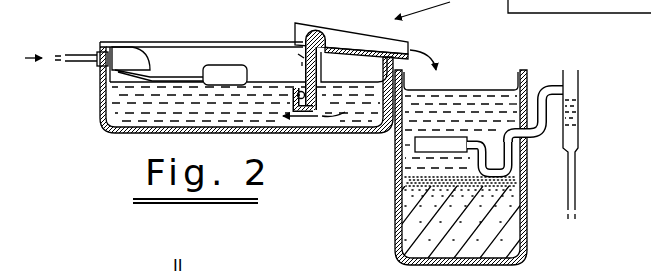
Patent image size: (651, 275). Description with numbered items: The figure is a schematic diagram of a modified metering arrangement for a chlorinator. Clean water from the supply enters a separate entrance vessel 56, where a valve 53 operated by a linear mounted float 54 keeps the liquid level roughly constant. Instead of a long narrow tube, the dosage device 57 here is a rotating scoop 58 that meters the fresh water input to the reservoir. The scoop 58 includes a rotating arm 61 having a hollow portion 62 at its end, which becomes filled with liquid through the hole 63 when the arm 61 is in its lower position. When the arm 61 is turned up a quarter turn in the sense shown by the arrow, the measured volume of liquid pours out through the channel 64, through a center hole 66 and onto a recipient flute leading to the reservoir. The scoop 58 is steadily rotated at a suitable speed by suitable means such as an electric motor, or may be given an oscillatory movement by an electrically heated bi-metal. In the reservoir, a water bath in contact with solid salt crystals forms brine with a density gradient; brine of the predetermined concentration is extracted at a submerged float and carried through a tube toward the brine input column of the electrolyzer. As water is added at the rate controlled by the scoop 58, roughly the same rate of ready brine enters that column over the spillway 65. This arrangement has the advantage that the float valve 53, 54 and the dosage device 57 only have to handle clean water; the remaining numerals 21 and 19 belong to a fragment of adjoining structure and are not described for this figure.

The valve 53 is at (127, 53).
The linear mounted float 54 is at (223, 70).
The entrance vessel 56 is at (100, 90).
The rotating scoop 58 is at (298, 53).
The rotating arm 61 is at (322, 73).
The hollow portion 62 is at (310, 118).
The hole 63 is at (297, 95).
The channel 64 is at (310, 66).
The center hole 66 is at (320, 44).
The dosage device 57 is at (424, 9).
The spillway 65 is at (536, 122).
The housing 21 is at (575, 5).
The cover 19 is at (606, 5).